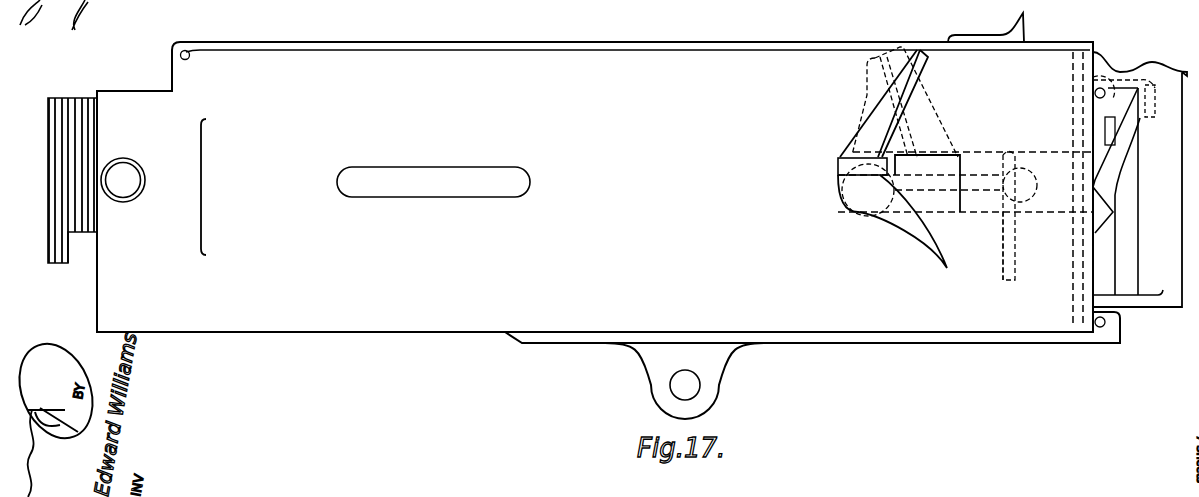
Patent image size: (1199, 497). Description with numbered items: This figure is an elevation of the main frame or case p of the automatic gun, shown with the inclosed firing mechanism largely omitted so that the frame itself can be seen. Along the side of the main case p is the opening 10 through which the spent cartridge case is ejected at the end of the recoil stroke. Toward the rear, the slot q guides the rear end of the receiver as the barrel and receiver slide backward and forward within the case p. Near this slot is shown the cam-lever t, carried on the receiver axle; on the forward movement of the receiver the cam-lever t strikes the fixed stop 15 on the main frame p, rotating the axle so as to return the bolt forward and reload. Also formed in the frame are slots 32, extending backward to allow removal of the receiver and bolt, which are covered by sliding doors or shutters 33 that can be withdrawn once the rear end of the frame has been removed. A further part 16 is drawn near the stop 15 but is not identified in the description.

The opening 10 is at (432, 188).
The fixed stop 15 is at (890, 98).
The lever bar 16 is at (895, 120).
The slots 32 is at (1018, 212).
The sliding doors or shutters 33 is at (1020, 216).
The main case p is at (384, 267).
The slots q is at (938, 203).
The cam-lever t is at (898, 222).